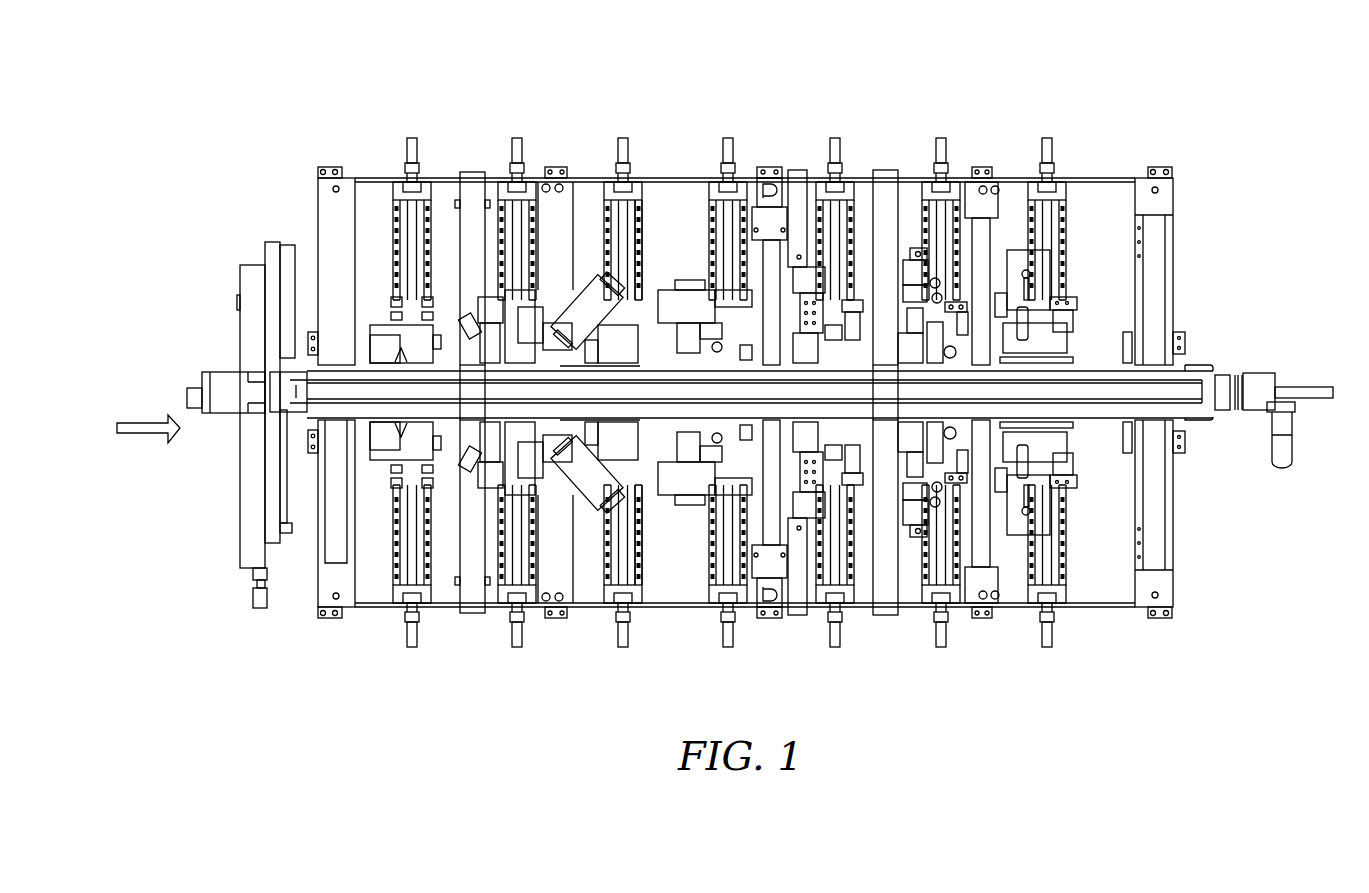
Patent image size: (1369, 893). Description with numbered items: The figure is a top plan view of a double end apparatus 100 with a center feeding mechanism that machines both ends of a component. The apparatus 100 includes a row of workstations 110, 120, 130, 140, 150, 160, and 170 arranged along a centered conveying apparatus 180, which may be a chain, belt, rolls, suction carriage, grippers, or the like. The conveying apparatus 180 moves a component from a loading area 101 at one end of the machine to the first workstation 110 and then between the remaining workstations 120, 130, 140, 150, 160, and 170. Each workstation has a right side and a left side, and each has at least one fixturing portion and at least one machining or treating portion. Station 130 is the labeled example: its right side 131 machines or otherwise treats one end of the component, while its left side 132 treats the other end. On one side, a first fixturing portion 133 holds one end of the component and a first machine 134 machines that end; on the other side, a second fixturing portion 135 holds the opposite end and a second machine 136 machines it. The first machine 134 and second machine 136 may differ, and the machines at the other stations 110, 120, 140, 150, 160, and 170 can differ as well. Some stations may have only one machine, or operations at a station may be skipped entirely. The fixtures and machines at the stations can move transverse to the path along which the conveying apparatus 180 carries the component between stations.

The double end apparatus 100 is at (995, 106).
The loading area 101 is at (253, 551).
The first workstation 110 is at (417, 642).
The workstation 120 is at (522, 642).
The workstation 130 is at (617, 409).
The right side 131 is at (645, 542).
The left side 132 is at (645, 245).
The first fixturing portion 133 is at (558, 456).
The first machine 134 is at (577, 520).
The second fixturing portion 135 is at (558, 330).
The second machine 136 is at (592, 366).
The workstation 140 is at (733, 642).
The workstation 150 is at (840, 642).
The workstation 160 is at (946, 642).
The workstation 170 is at (1052, 642).
The conveying apparatus 180 is at (320, 397).